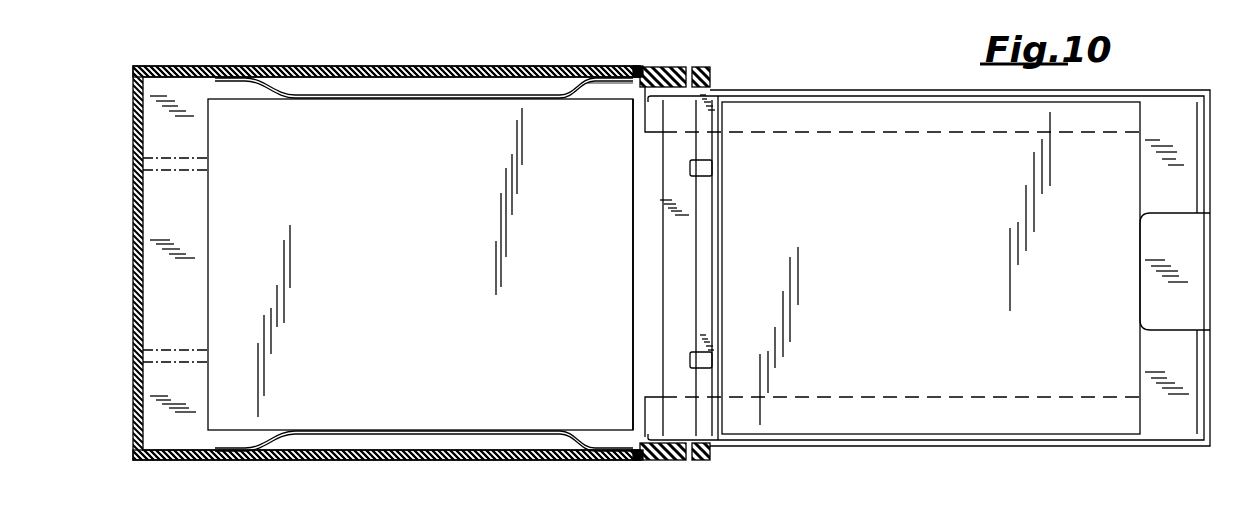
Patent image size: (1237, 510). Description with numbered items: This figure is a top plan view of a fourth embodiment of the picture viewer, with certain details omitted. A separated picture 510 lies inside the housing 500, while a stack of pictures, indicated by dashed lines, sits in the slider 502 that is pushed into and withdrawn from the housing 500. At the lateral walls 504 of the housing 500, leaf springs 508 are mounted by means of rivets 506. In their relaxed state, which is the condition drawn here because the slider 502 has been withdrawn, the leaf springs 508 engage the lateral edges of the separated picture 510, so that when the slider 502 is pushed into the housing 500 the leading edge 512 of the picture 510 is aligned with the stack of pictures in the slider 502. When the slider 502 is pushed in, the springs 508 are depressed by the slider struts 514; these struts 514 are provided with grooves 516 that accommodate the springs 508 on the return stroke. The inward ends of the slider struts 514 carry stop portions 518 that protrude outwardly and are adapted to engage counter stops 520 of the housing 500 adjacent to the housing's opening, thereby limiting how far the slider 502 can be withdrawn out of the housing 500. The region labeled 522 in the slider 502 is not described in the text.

The housing 500 is at (417, 60).
The slider 502 is at (912, 82).
The lateral walls 504 is at (342, 66).
The rivets 506 is at (621, 82).
The leaf springs 508 is at (546, 88).
The separated picture 510 is at (394, 276).
The leading edge 512 is at (634, 229).
The slider struts 514 is at (780, 96).
The grooves 516 is at (666, 82).
The stop portions 518 is at (636, 76).
The counter stops 520 is at (700, 76).
The second cell 522 is at (919, 280).